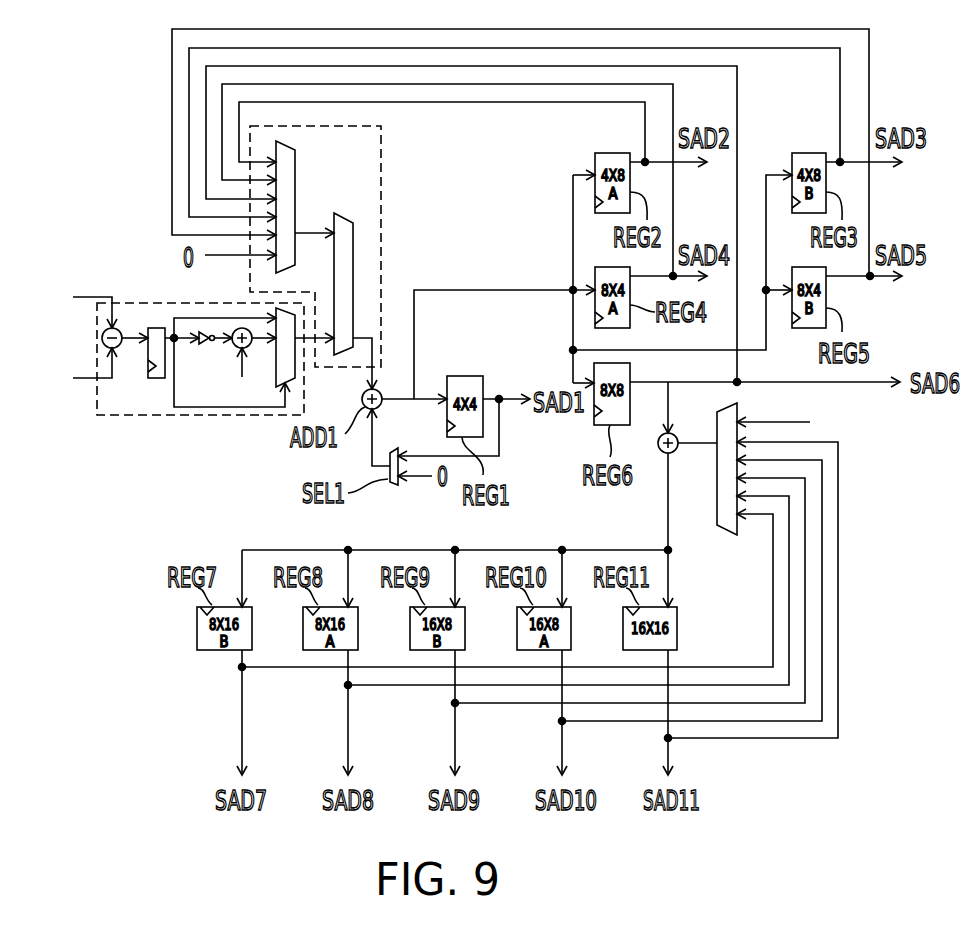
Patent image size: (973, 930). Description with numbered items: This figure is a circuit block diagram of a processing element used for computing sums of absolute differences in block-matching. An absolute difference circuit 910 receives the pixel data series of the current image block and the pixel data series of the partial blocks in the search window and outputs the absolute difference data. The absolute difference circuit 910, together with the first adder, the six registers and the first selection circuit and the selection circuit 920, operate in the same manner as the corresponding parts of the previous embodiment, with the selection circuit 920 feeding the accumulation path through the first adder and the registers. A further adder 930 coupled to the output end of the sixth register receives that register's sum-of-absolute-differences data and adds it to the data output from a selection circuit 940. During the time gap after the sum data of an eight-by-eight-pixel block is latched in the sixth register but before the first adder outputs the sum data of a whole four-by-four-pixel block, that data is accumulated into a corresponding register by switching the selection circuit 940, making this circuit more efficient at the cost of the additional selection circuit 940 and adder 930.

The absolute difference circuit 910 is at (160, 415).
The selection circuit 920 is at (381, 174).
The adder 930 is at (677, 450).
The selection circuit 940 is at (725, 410).